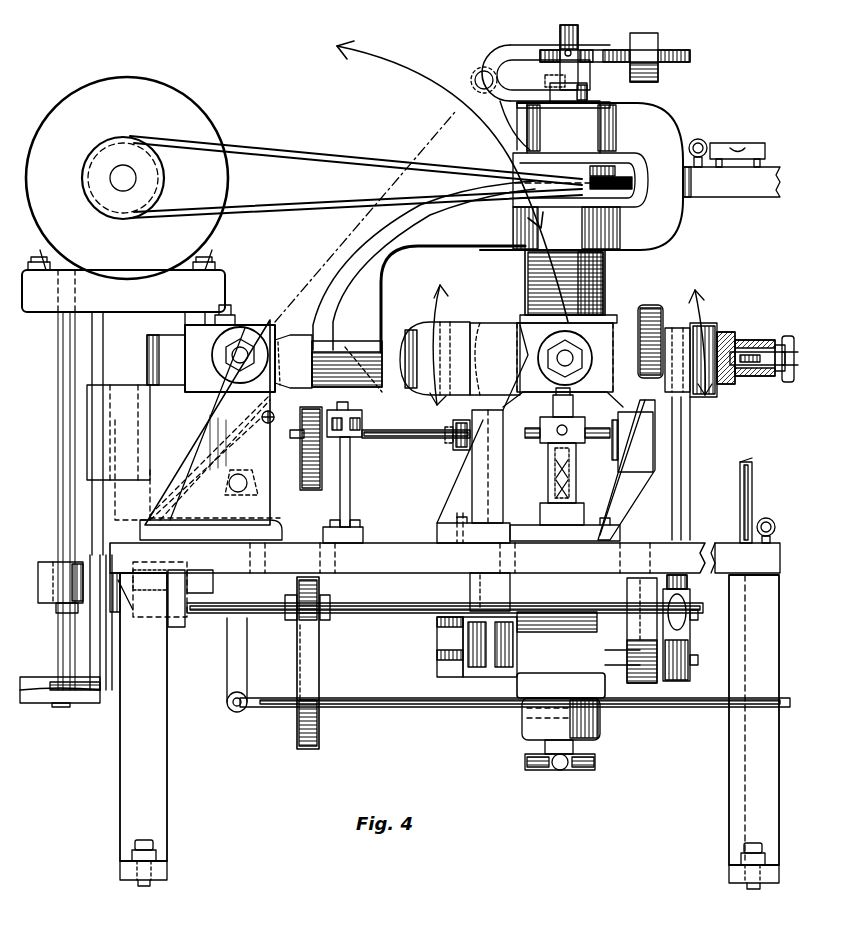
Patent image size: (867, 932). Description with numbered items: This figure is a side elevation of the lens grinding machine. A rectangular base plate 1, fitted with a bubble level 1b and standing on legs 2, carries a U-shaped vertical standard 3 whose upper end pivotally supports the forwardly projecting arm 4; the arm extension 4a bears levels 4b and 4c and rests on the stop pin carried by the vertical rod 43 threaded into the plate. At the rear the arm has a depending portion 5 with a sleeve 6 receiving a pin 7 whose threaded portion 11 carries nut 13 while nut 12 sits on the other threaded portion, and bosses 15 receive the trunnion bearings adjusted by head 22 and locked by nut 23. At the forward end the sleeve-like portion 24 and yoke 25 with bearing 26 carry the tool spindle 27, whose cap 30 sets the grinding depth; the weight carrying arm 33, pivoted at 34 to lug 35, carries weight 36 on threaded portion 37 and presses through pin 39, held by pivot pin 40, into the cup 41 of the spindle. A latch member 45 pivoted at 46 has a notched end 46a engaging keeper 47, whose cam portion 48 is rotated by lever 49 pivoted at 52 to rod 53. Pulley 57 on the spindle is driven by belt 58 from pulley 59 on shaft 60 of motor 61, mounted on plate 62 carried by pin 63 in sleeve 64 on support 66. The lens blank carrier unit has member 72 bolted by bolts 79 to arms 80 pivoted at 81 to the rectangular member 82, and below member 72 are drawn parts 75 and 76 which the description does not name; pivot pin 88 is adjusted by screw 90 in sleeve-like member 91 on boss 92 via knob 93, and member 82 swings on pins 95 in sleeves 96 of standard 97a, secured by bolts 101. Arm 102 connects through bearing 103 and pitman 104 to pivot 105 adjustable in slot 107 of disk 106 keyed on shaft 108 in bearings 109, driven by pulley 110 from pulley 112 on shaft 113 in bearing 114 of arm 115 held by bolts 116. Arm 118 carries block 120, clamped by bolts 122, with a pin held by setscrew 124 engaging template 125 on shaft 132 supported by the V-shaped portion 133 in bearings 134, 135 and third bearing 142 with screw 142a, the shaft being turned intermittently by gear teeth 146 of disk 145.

The base plate 1 is at (430, 560).
The level 1b is at (766, 518).
The legs 2 is at (148, 733).
The vertical standard 3 is at (258, 456).
The arm 4 is at (468, 243).
The extension 4a is at (765, 185).
The level 4b is at (700, 135).
The level 4c is at (738, 145).
The depending portion 5 is at (330, 278).
The sleeve 6 is at (370, 360).
The pin 7 is at (306, 334).
The threaded portion 11 is at (146, 362).
The nut 12 is at (308, 355).
The nut 13 is at (172, 322).
The bosses 15 is at (232, 378).
The head 22 is at (230, 352).
The lock nut 23 is at (238, 350).
The sleeve-like portion 24 is at (537, 254).
The yoke portion 25 is at (660, 203).
The bearing 26 is at (593, 126).
The tool carrying spindle 27 is at (590, 95).
The cap 30 is at (608, 318).
The weight carrying arm 33 is at (598, 50).
The pivot 34 is at (479, 74).
The lug 35 is at (500, 108).
The weight 36 is at (645, 40).
The threaded portion 37 is at (677, 50).
The depending pin 39 is at (580, 74).
The pivot pin 40 is at (567, 48).
The cup 41 is at (546, 88).
The vertical rod 43 is at (752, 471).
The latch member 45 is at (220, 441).
The pivot 46 is at (262, 417).
The notched lower end 46a is at (208, 565).
The keeper 47 is at (249, 484).
The cam portion 48 is at (250, 501).
The lever 49 is at (270, 529).
The pivotal connection 52 is at (243, 698).
The rod 53 is at (365, 700).
The pulley 57 is at (558, 175).
The belt 58 is at (340, 160).
The pulley 59 is at (148, 181).
The shaft 60 is at (121, 176).
The electric motor 61 is at (183, 233).
The plate 62 is at (108, 300).
The pin 63 is at (118, 346).
The sleeve 64 is at (100, 420).
The support 66 is at (125, 493).
The member 72 is at (490, 645).
The foot 75 is at (530, 759).
The housing 76 is at (540, 724).
The bolts 79 is at (437, 656).
The arms 80 is at (450, 469).
The pivot structures 81 is at (470, 345).
The supporting member 82 is at (498, 323).
The pivot pin 88 is at (742, 366).
The screw 90 is at (750, 342).
The sleeve-like member 91 is at (778, 345).
The boss 92 is at (725, 332).
The knob 93 is at (784, 382).
The pivot pin 95 is at (577, 352).
The sleeve 96 is at (548, 350).
The vertical standard 97a is at (612, 506).
The bolts 101 is at (450, 520).
The arm 102 is at (650, 318).
The ball and socket bearing 103 is at (660, 339).
The pitman 104 is at (682, 447).
The ball and socket pivot structure 105 is at (686, 611).
The disk 106 is at (645, 683).
The slot 107 is at (687, 593).
The shaft 108 is at (390, 613).
The bearings 109 is at (182, 627).
The pulley 110 is at (95, 631).
The pulley 112 is at (35, 680).
The shaft 113 is at (60, 609).
The bearing 114 is at (50, 581).
The arm 115 is at (130, 612).
The bolts 116 is at (203, 595).
The arm 118 is at (545, 531).
The block 120 is at (540, 509).
The bolts 122 is at (548, 477).
The setscrew 124 is at (553, 405).
The template 125 is at (545, 441).
The shaft 132 is at (416, 432).
The inverted V-shaped upper portion 133 is at (512, 364).
The bearing portion 134 is at (635, 441).
The bearing portion 135 is at (462, 447).
The third bearing 142 is at (352, 450).
The screw 142a is at (360, 440).
The disk 145 is at (309, 661).
The gear teeth 146 is at (312, 619).